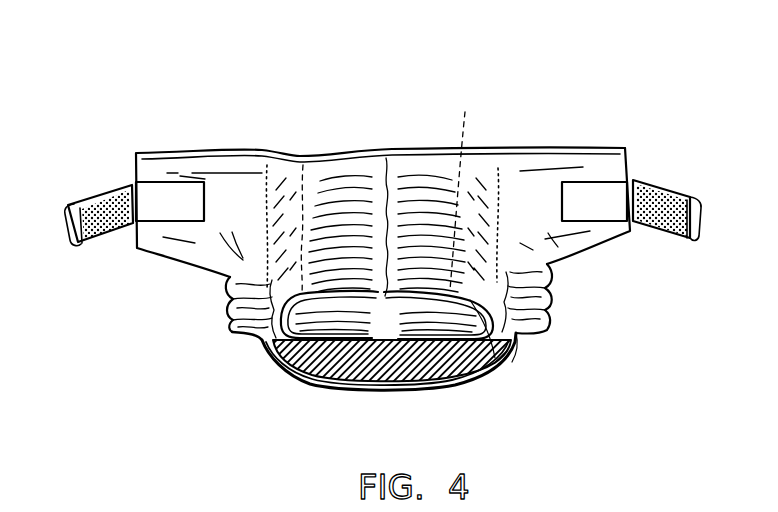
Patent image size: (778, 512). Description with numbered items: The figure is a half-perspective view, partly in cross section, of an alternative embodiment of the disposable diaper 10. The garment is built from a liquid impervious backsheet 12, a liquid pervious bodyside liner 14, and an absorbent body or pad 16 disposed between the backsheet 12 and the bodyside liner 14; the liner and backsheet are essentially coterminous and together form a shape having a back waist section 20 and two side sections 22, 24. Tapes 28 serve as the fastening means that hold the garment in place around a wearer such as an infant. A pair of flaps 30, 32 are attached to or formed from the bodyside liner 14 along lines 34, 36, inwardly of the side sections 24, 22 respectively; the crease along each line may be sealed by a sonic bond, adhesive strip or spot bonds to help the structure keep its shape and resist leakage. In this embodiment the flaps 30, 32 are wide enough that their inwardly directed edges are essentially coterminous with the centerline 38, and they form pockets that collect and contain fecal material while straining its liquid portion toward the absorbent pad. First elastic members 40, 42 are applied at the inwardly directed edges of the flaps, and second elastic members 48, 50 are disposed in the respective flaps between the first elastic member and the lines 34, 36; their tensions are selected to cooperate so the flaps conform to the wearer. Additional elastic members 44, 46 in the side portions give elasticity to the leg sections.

The disposable diaper 10 is at (502, 118).
The backsheet 12 is at (318, 387).
The bodyside liner 14 is at (495, 357).
The absorbent body or pad 16 is at (514, 360).
The back waist section 20 is at (200, 154).
The side section 22 is at (232, 308).
The side section 24 is at (547, 292).
The tapes 28 is at (100, 192).
The flap 30 is at (423, 303).
The flap 32 is at (278, 365).
The line 34 is at (508, 195).
The line 36 is at (268, 187).
The centerline 38 is at (380, 408).
The elastic member 40 is at (387, 293).
The elastic member 42 is at (345, 300).
The elastic member 44 is at (550, 323).
The elastic member 46 is at (230, 277).
The second elastic member 48 is at (443, 193).
The second elastic member 50 is at (303, 165).